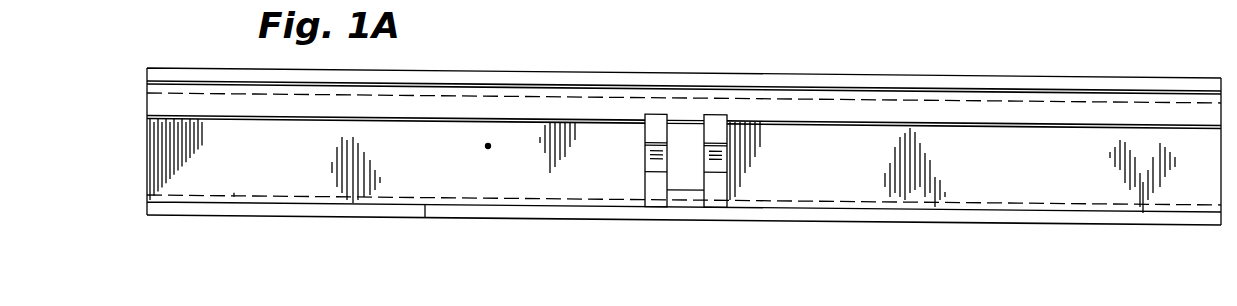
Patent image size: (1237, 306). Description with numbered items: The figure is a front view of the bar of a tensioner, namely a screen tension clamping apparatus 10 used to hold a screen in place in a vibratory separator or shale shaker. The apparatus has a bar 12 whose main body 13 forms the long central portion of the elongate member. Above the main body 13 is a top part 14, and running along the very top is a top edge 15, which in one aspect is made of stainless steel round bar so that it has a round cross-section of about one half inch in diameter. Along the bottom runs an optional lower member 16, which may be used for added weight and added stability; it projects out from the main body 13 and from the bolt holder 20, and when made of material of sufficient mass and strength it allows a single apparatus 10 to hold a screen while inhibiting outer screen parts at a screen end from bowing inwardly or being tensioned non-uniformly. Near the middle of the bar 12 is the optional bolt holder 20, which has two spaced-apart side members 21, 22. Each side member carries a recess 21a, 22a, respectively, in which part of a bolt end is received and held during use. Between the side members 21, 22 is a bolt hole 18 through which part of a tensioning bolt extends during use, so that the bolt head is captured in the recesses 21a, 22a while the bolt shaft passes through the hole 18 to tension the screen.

The screen tension clamping apparatus 10 is at (284, 216).
The bar 12 is at (425, 217).
The main body 13 is at (492, 162).
The top part 14 is at (963, 93).
The top edge 15 is at (1050, 82).
The lower member 16 is at (1050, 218).
The bolt hole 18 is at (688, 147).
The bolt holder 20 is at (645, 185).
The side member 21 is at (653, 193).
The recess 21a is at (653, 160).
The side member 22 is at (715, 188).
The recess 22a is at (728, 155).